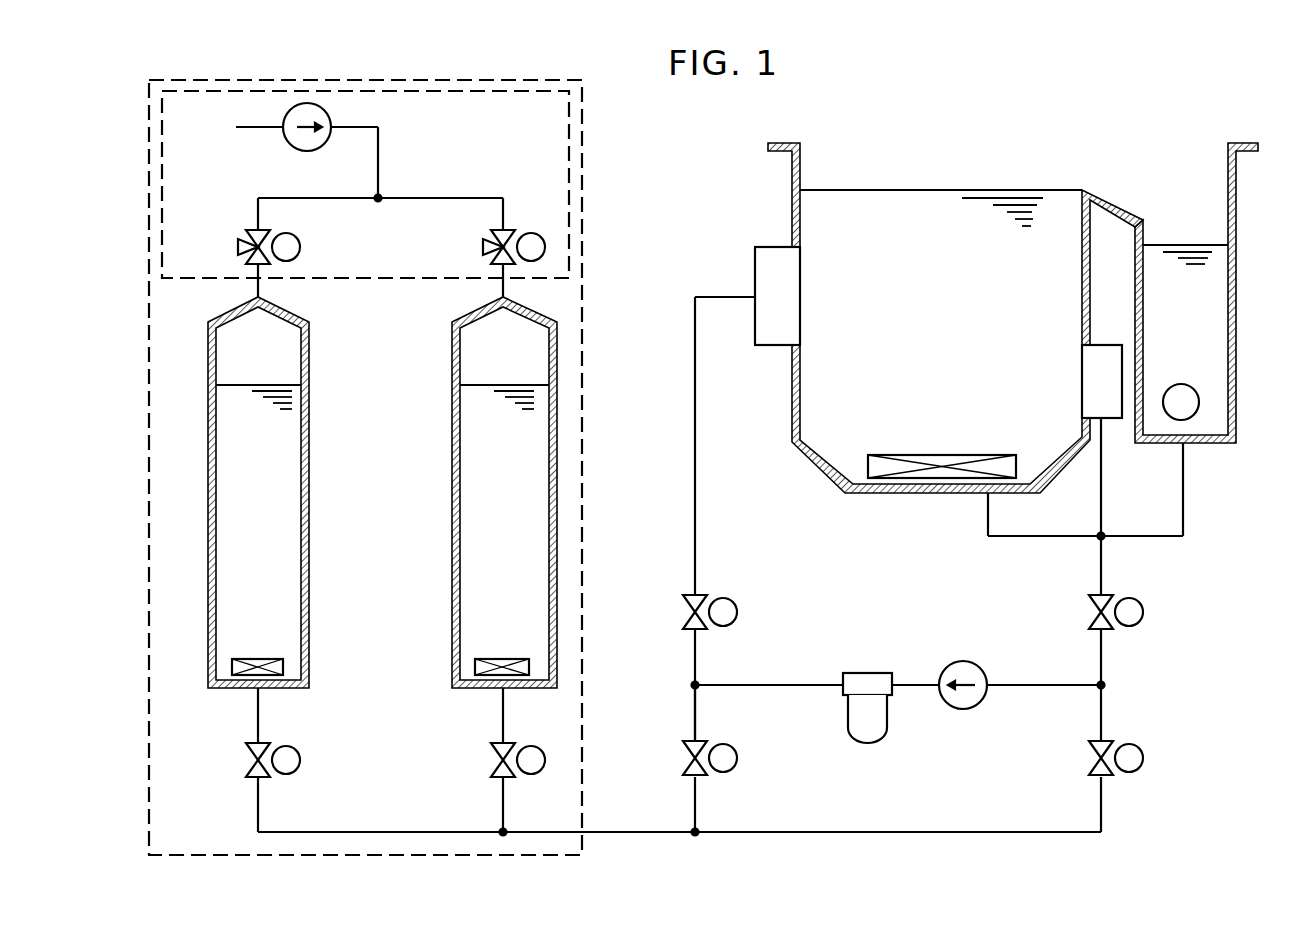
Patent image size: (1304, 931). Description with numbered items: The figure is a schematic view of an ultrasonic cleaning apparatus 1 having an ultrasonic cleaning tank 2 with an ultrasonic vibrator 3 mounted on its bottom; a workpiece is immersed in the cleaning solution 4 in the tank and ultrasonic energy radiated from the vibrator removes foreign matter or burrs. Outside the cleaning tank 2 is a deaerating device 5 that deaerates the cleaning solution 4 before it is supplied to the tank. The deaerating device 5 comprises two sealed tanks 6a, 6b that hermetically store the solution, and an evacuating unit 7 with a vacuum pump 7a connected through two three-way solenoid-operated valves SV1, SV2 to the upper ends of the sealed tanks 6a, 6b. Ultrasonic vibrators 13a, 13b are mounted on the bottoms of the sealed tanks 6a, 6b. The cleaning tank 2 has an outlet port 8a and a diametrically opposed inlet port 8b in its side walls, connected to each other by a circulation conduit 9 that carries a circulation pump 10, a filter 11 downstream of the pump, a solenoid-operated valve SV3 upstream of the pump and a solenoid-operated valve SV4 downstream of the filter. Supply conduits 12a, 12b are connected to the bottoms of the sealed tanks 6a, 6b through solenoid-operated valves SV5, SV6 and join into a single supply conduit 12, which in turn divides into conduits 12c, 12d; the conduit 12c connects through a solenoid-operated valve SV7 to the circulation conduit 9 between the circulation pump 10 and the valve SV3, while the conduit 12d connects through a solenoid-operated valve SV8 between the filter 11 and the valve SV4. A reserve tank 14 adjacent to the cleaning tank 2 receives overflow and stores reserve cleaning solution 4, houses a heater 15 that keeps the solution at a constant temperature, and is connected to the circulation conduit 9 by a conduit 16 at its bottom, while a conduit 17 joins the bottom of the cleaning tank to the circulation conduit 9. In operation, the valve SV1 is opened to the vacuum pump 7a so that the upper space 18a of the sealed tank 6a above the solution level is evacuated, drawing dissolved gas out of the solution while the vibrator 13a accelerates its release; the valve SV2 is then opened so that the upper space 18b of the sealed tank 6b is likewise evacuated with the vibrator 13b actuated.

The ultrasonic cleaning apparatus 1 is at (1003, 175).
The ultrasonic cleaning tank 2 is at (798, 450).
The ultrasonic vibrator 3 is at (960, 458).
The cleaning solution 4 is at (875, 207).
The deaerating device 5 is at (582, 548).
The sealed tank 6a is at (557, 479).
The sealed tank 6b is at (309, 479).
The evacuating unit 7 is at (569, 152).
The vacuum pump 7a is at (293, 138).
The outlet port 8a is at (1103, 343).
The inlet port 8b is at (777, 247).
The circulation conduit 9 is at (695, 443).
The circulation pump 10 is at (965, 668).
The filter 11 is at (867, 673).
The supply conduit 12 is at (617, 833).
The supply conduit 12a is at (503, 807).
The supply conduit 12b is at (388, 832).
The conduit 12c is at (913, 832).
The conduit 12d is at (697, 710).
The ultrasonic vibrator 13a is at (529, 668).
The ultrasonic vibrator 13b is at (255, 659).
The reserve tank 14 is at (1237, 293).
The heater 15 is at (1200, 402).
The conduit 16 is at (1183, 493).
The conduit 17 is at (988, 519).
The upper space 18a is at (549, 357).
The upper space 18b is at (292, 359).
The three-way solenoid-operated valve SV1 is at (557, 218).
The three-way solenoid-operated valve SV2 is at (290, 252).
The solenoid-operated valve SV3 is at (1130, 618).
The solenoid-operated valve SV4 is at (728, 618).
The solenoid-operated valve SV5 is at (557, 750).
The solenoid-operated valve SV6 is at (290, 760).
The solenoid-operated valve SV7 is at (1130, 757).
The solenoid-operated valve SV8 is at (728, 767).